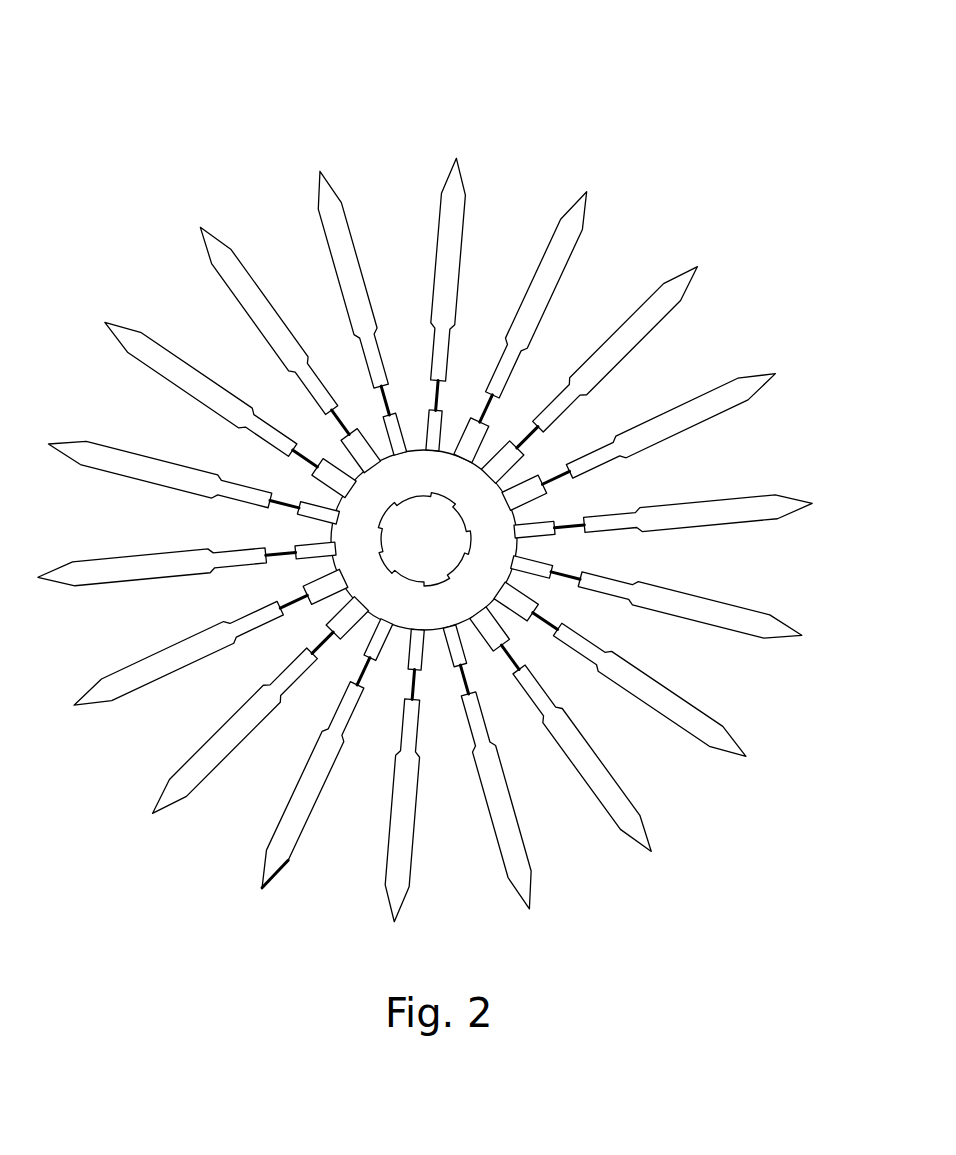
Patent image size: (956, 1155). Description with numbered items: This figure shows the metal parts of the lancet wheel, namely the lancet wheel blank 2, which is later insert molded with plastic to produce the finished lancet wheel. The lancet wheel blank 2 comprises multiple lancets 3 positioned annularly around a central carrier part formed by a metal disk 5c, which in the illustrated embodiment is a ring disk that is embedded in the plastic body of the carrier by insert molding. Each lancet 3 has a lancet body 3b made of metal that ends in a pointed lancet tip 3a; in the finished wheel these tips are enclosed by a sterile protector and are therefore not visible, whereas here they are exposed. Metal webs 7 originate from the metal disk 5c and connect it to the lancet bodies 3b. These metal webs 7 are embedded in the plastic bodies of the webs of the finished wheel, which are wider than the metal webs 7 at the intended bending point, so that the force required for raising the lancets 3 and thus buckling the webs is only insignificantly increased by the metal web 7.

The lancet wheel blank 2 is at (187, 158).
The lancet 3 is at (137, 703).
The lancet tip 3a is at (267, 890).
The lancet body 3b is at (293, 830).
The metal disk 5c is at (512, 527).
The metal web 7 is at (413, 678).